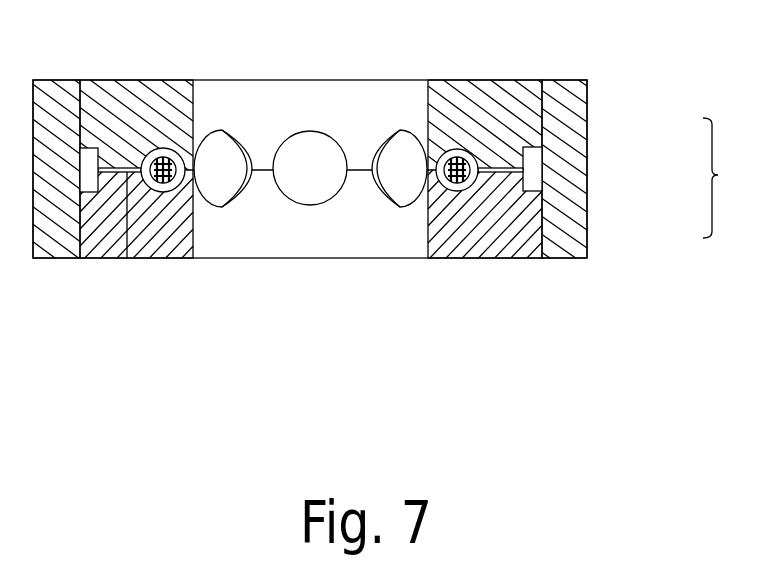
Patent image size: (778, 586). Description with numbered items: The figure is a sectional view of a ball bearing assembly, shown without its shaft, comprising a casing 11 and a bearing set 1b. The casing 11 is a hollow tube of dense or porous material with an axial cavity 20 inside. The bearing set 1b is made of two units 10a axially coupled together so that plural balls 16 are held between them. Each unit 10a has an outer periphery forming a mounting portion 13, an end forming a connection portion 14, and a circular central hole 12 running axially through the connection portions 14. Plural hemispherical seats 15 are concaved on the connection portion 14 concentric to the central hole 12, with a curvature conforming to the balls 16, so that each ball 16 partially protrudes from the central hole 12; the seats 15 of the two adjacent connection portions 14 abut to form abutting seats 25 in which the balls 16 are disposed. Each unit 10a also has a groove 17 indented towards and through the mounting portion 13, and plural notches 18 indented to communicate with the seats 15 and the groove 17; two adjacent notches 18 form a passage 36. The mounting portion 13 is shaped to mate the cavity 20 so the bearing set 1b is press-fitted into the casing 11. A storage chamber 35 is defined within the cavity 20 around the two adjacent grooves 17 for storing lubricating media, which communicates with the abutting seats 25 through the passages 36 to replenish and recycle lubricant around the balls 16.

The bearing set 1b is at (726, 178).
The unit 10a is at (508, 102).
The casing 11 is at (67, 247).
The central hole 12 is at (357, 228).
The mounting portion 13 is at (542, 93).
The connection portion 14 is at (167, 258).
The hemispherical seat 15 is at (170, 160).
The ball 16 is at (197, 142).
The groove 17 is at (90, 195).
The notch 18 is at (127, 258).
The cavity 20 is at (86, 92).
The abutting seat 25 is at (238, 140).
The storage chamber 35 is at (88, 170).
The passage 36 is at (110, 166).